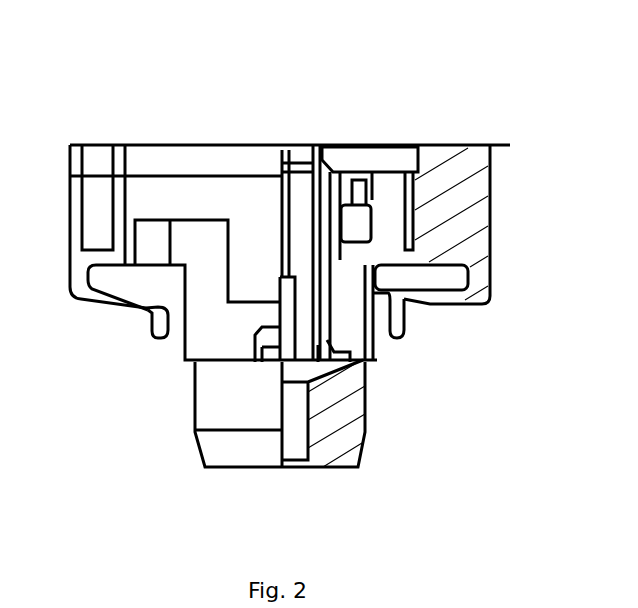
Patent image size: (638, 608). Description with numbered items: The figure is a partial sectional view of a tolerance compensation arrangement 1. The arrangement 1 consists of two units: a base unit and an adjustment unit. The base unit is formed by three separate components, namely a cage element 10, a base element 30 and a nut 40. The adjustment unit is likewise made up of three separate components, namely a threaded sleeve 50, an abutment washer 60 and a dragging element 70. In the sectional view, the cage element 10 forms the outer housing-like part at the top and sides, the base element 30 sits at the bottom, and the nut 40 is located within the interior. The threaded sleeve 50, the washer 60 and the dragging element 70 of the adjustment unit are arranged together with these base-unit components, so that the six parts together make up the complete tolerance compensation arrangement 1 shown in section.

The tolerance compensation arrangement 1 is at (547, 45).
The cage element 10 is at (452, 183).
The base element 30 is at (348, 422).
The nut 40 is at (360, 222).
The threaded sleeve 50 is at (340, 268).
The abutment washer 60 is at (375, 158).
The dragging element 70 is at (321, 315).